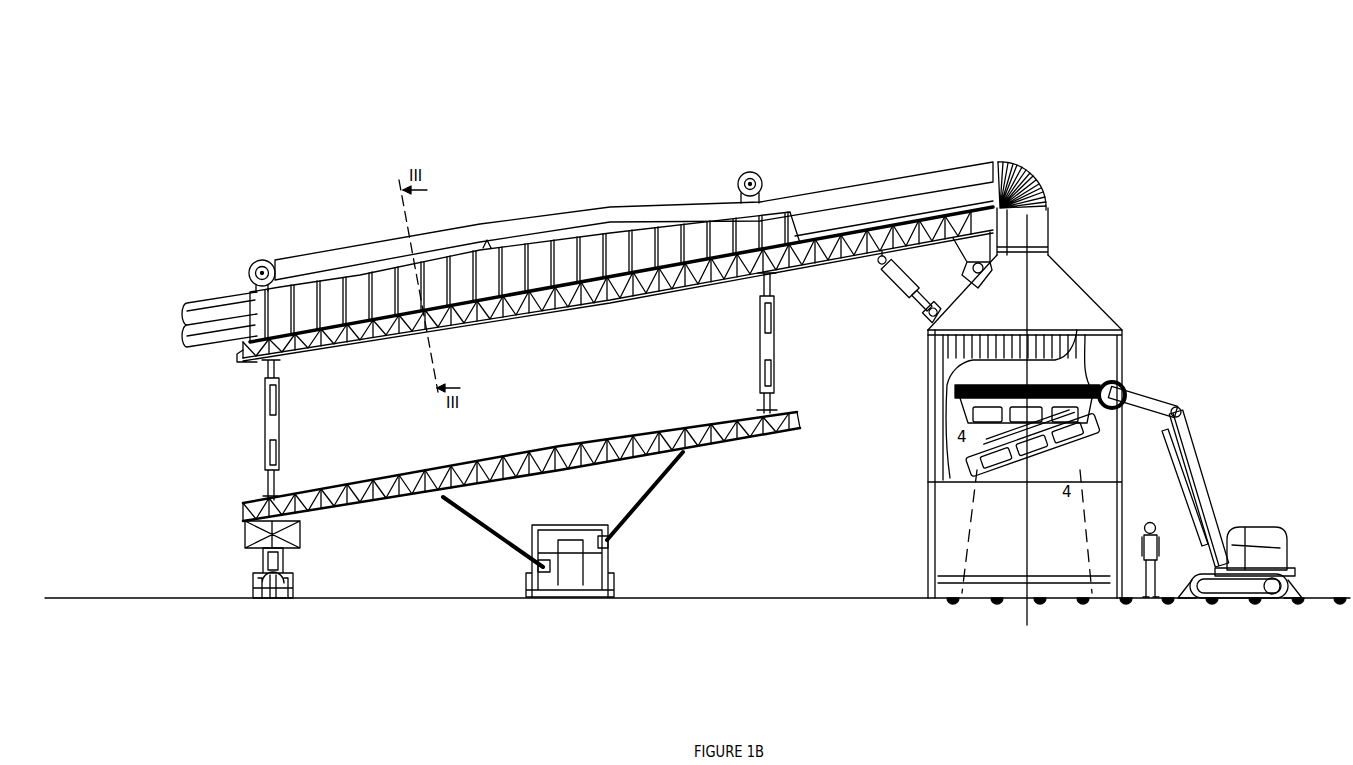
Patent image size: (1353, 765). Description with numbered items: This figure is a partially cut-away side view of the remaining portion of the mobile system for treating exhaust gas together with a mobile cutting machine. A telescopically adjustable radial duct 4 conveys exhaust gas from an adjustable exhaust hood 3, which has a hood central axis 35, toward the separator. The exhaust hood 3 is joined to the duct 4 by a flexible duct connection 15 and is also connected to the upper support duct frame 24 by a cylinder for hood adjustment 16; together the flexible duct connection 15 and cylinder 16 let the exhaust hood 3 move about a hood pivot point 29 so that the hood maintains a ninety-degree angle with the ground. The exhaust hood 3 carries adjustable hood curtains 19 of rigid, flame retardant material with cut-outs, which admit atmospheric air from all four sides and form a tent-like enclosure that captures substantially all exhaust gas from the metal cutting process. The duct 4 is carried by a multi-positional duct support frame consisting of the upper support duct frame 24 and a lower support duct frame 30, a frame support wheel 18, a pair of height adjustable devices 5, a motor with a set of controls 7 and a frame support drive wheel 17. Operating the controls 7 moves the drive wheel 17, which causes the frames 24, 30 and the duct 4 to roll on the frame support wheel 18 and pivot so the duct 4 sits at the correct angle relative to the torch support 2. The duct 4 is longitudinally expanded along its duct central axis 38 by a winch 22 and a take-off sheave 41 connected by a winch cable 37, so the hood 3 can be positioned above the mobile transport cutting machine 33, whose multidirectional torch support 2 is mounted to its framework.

The torch support 2 is at (1095, 380).
The exhaust hood 3 is at (1075, 282).
The telescopically adjustable duct 4 is at (846, 183).
The height adjustable devices 5 is at (278, 462).
The motor with set of controls 7 is at (608, 560).
The flexible duct connection 15 is at (1042, 184).
The cylinder for hood adjustment 16 is at (890, 287).
The frame support drive wheel 17 is at (530, 585).
The frame support wheel 18 is at (293, 595).
The adjustable hood curtains 19 is at (930, 487).
The winch 22 is at (271, 262).
The upper support duct frame 24 is at (512, 318).
The hood pivot point 29 is at (981, 277).
The lower support duct frame 30 is at (370, 508).
The mobile transport cutting machine 33 is at (1290, 543).
The hood central axis 35 is at (1028, 553).
The winch cable 37 is at (502, 220).
The duct central axis 38 is at (602, 248).
The take-off sheave 41 is at (756, 176).